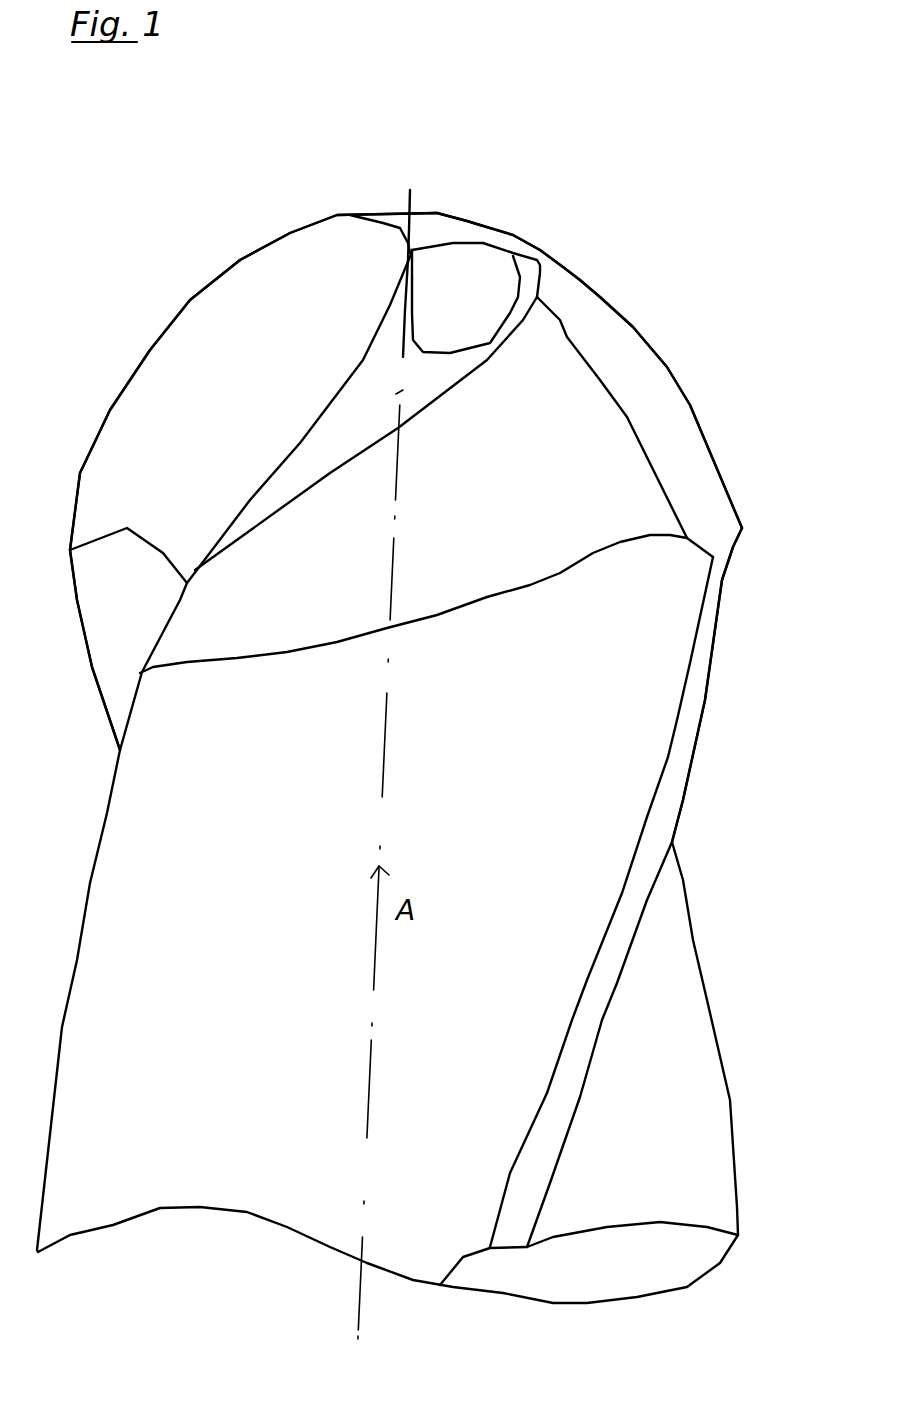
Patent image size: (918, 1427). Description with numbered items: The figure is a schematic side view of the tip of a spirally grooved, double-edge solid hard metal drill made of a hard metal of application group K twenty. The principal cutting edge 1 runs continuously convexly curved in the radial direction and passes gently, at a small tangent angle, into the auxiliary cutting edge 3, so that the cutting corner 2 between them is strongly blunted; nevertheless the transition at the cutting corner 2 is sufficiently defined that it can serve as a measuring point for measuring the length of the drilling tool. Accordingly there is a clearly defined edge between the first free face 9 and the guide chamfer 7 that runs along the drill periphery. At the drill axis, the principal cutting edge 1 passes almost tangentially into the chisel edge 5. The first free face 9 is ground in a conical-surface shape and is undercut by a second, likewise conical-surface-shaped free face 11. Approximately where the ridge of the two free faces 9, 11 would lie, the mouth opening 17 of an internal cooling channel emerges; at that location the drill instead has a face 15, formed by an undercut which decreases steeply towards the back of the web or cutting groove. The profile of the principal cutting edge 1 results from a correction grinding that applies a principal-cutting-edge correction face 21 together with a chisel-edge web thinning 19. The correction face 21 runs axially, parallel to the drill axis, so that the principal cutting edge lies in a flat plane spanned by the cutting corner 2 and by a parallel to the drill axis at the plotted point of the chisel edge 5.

The principal cutting edge 1 is at (240, 260).
The cutting corner 2 is at (70, 550).
The auxiliary cutting edge 3 is at (92, 667).
The chisel edge 5 is at (410, 190).
The guide chamfer 7 is at (700, 663).
The first free face 9 is at (622, 347).
The second free face 11 is at (595, 450).
The face 15 is at (425, 262).
The mouth opening 17 is at (495, 275).
The chisel-edge web thinning 19 is at (397, 253).
The principal-cutting-edge correction face 21 is at (305, 275).